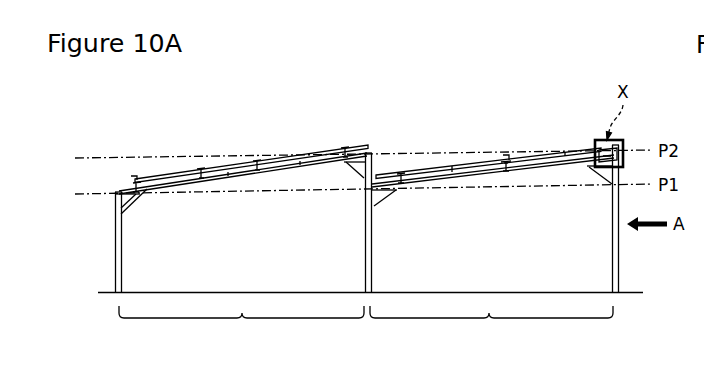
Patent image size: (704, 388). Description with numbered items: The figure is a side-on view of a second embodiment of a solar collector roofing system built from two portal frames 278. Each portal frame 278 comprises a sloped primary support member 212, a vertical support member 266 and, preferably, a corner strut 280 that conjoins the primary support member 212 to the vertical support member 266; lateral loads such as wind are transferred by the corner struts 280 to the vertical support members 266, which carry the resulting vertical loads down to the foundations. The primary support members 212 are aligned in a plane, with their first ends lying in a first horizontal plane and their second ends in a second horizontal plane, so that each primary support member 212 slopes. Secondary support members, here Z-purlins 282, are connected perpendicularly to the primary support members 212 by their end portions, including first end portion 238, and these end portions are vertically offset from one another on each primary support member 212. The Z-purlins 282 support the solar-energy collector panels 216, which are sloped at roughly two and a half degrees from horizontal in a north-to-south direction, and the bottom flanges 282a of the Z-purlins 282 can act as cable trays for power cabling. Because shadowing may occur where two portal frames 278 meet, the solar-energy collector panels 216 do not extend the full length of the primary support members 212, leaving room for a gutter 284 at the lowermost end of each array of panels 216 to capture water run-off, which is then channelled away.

The primary support member 212 is at (281, 166).
The solar-energy collector panel 216 is at (400, 171).
The first end portion 238 is at (254, 158).
The vertical support member 266 is at (112, 242).
The portal frame 278 is at (366, 331).
The corner strut 280 is at (119, 211).
The Z-purlin 282 is at (507, 157).
The bottom flange 282a is at (499, 160).
The gutter 284 is at (135, 181).